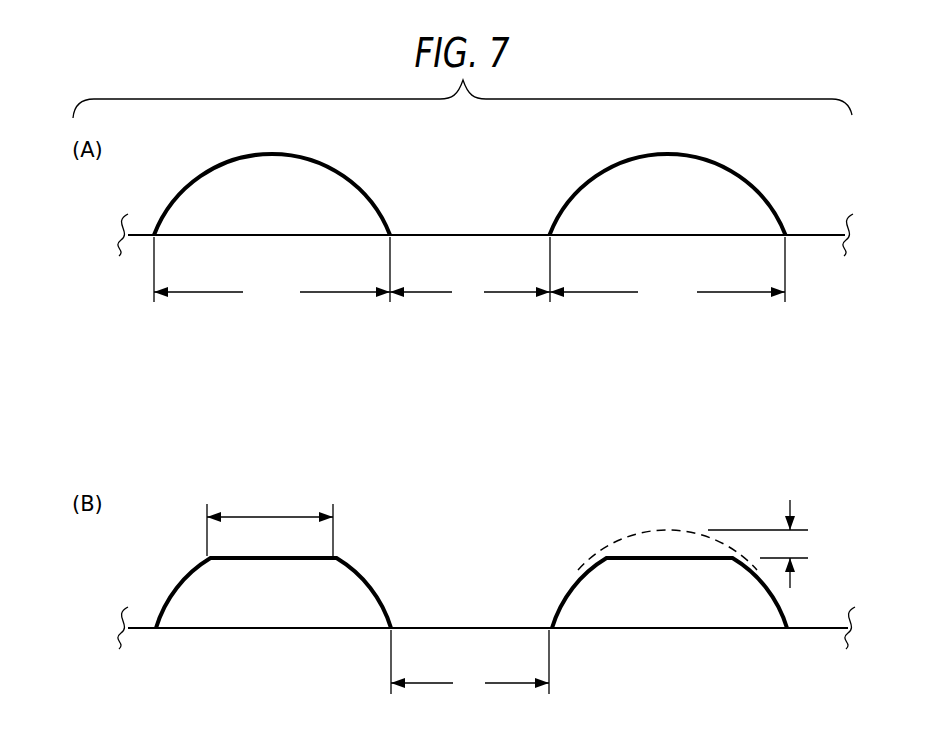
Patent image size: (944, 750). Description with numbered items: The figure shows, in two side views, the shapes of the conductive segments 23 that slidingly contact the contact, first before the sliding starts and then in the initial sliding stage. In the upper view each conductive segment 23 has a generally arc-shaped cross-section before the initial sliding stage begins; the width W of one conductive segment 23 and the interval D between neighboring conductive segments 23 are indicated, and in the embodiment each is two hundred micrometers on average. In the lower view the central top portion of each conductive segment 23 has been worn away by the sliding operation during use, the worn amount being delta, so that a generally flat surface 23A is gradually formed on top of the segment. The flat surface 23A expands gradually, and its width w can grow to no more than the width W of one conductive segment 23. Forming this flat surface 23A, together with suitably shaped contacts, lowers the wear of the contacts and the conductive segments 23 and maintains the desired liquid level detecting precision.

The conductive segment 23 is at (594, 190).
The flat surface 23A is at (641, 552).
The width of conductive segment W is at (469, 271).
The interval between conductive segments D is at (470, 488).
The width of flat surface w is at (270, 525).
The worn amount delta is at (766, 544).